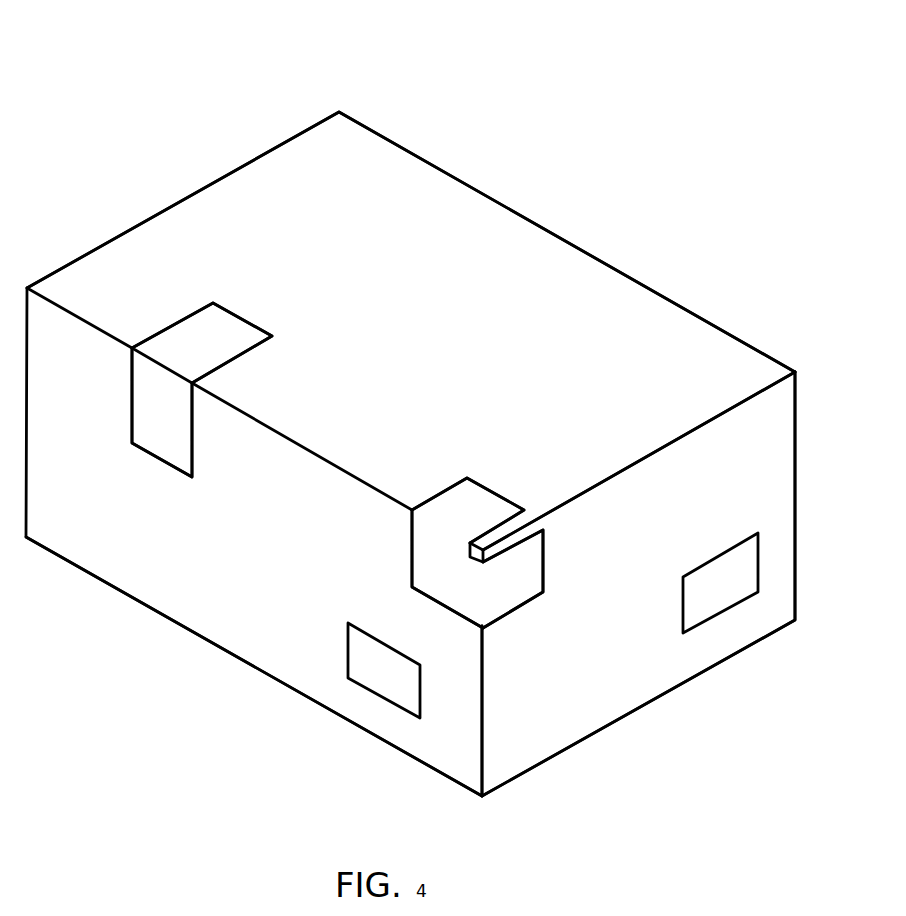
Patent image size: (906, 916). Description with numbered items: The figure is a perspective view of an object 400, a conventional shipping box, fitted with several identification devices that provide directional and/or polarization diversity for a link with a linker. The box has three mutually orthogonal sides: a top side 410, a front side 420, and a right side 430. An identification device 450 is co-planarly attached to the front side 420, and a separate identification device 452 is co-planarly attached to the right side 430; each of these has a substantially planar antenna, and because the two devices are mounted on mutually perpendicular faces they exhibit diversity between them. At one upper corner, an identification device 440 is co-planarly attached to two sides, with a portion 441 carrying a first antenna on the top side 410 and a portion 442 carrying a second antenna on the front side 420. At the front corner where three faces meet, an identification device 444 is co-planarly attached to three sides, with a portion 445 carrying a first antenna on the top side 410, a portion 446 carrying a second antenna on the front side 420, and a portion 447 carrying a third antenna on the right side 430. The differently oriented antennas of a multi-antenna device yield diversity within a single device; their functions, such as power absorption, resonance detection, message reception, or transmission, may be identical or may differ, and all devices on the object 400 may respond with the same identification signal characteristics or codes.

The object 400 is at (213, 86).
The side 410 is at (385, 216).
The side 420 is at (215, 578).
The side 430 is at (721, 510).
The identification device 440 is at (193, 380).
The portion 441 is at (235, 352).
The portion 442 is at (185, 434).
The identification device 444 is at (603, 500).
The portion 445 is at (490, 518).
The portion 446 is at (464, 568).
The portion 447 is at (535, 585).
The identification device 450 is at (348, 637).
The identification device 452 is at (682, 612).